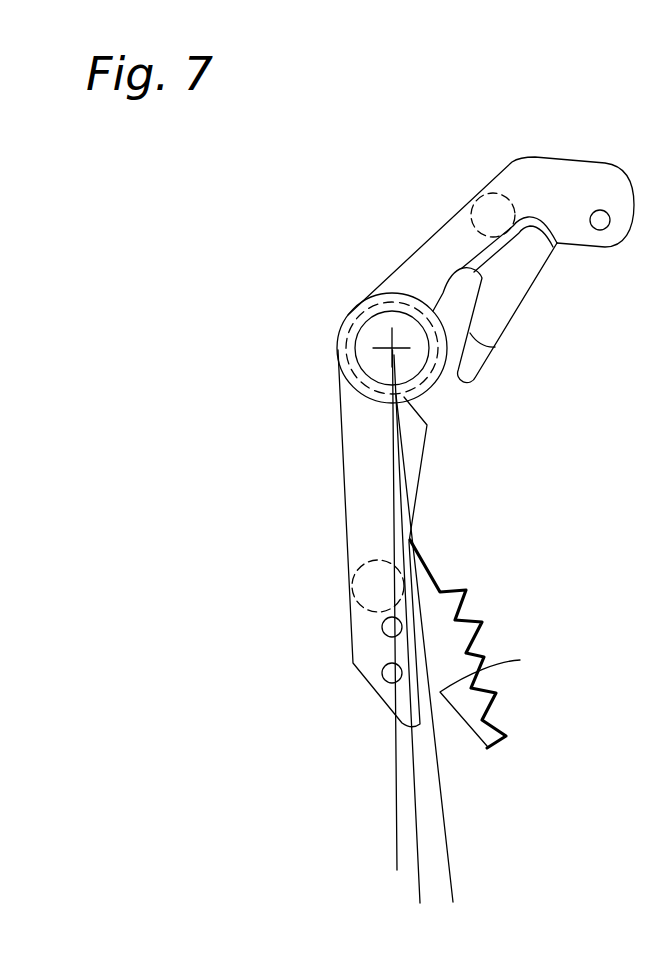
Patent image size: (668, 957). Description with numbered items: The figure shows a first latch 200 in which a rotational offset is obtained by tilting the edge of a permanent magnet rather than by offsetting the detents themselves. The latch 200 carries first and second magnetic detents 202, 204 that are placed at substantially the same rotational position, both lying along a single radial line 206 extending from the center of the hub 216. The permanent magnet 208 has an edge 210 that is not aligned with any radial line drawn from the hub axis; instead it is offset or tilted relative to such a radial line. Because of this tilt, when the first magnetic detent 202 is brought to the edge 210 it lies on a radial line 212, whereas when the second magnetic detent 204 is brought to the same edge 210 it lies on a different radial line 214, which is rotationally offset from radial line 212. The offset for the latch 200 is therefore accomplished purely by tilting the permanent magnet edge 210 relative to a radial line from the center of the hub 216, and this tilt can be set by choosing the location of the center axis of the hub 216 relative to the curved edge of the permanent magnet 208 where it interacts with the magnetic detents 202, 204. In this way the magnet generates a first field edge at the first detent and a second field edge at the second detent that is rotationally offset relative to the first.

The first latch 200 is at (363, 257).
The first magnetic detent 202 is at (405, 628).
The second magnetic detent 204 is at (427, 673).
The radial line 206 is at (395, 797).
The permanent magnet 208 is at (458, 589).
The edge 210 is at (520, 660).
The radial line 212 is at (418, 885).
The radial line 214 is at (452, 877).
The hub 216 is at (348, 322).